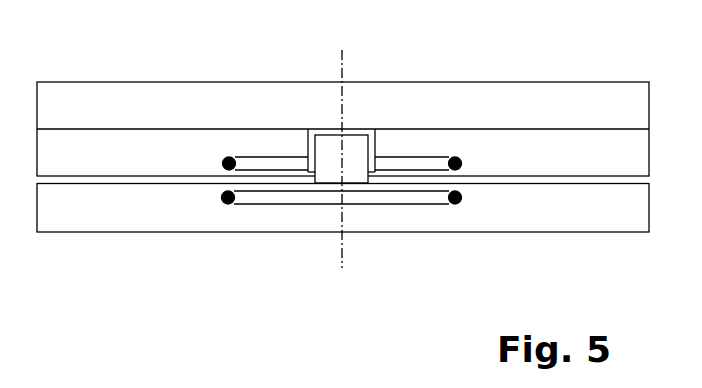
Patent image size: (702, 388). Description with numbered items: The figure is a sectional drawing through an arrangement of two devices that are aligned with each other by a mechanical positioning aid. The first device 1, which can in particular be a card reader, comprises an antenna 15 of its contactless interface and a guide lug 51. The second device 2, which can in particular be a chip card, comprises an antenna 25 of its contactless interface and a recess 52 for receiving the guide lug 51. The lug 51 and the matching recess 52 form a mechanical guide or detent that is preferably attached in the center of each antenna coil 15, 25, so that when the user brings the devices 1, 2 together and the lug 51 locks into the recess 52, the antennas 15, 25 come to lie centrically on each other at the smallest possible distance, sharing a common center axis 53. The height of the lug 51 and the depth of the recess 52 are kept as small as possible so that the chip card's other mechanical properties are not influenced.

The first device 1 is at (123, 215).
The second device 2 is at (474, 137).
The antenna 15 is at (268, 197).
The antenna 25 is at (302, 163).
The guide lug 51 is at (362, 140).
The recess 52 is at (322, 134).
The center axis 53 is at (340, 247).